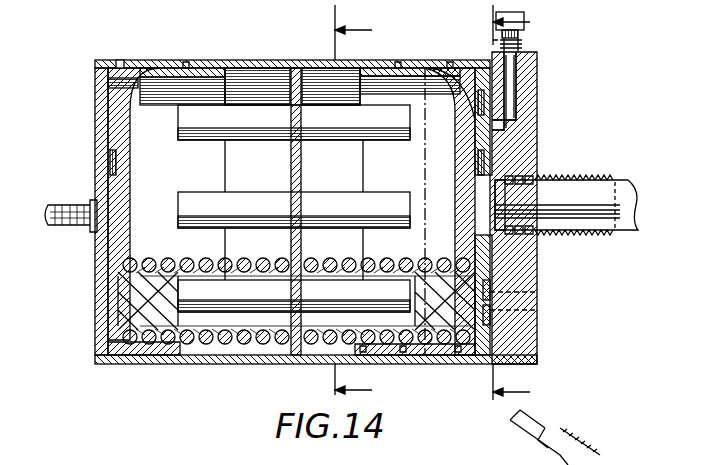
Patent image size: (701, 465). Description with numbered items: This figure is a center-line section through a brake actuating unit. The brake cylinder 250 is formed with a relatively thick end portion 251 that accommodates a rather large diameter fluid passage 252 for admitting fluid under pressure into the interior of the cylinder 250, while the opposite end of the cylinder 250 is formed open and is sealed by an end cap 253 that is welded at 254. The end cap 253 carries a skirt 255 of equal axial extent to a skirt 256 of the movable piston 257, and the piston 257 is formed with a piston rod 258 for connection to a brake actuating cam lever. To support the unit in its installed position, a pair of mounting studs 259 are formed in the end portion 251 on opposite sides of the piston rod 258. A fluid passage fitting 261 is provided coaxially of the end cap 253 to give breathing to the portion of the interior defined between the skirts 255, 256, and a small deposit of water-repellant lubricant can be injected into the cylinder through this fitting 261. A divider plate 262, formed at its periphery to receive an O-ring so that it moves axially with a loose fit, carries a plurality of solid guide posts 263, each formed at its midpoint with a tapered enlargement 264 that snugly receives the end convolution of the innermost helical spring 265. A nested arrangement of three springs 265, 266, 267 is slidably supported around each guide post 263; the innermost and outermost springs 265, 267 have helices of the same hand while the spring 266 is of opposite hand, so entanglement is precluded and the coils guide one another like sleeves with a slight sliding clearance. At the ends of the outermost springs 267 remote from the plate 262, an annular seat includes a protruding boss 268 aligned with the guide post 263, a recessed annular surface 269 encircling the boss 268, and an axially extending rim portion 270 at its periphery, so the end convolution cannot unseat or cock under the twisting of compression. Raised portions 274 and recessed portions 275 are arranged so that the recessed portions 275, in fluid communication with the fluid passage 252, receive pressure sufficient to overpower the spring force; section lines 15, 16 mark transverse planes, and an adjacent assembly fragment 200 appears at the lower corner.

The section line 15 is at (516, 203).
The section line 16 is at (359, 202).
The adjacent assembly fragment 200 is at (565, 448).
The brake cylinder 250 is at (252, 62).
The end portion 251 is at (528, 160).
The fluid passage 252 is at (522, 112).
The end cap 253 is at (100, 133).
The weld 254 is at (95, 65).
The skirt 255 is at (158, 213).
The skirt 256 is at (468, 95).
The piston 257 is at (463, 62).
The piston rod 258 is at (640, 210).
The mounting stud 259 is at (552, 178).
The fluid passage fitting 261 is at (56, 205).
The divider plate 262 is at (301, 168).
The guide post 263 is at (200, 142).
The tapered enlargement 264 is at (290, 190).
The innermost helical spring 265 is at (190, 280).
The spring 266 is at (170, 258).
The outermost spring 267 is at (140, 258).
The protruding boss 268 is at (112, 128).
The recessed annular surface 269 is at (118, 100).
The rim portion 270 is at (118, 66).
The raised portion 274 is at (495, 310).
The recessed portion 275 is at (495, 290).